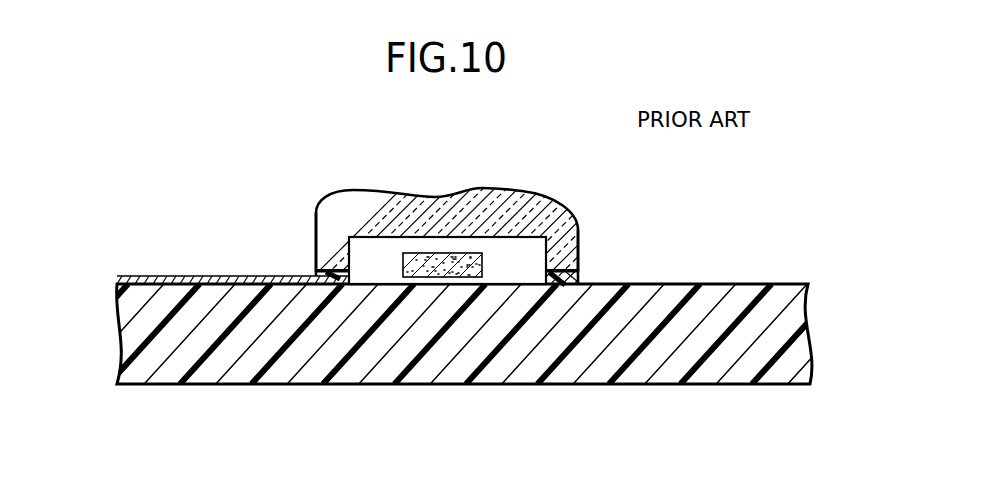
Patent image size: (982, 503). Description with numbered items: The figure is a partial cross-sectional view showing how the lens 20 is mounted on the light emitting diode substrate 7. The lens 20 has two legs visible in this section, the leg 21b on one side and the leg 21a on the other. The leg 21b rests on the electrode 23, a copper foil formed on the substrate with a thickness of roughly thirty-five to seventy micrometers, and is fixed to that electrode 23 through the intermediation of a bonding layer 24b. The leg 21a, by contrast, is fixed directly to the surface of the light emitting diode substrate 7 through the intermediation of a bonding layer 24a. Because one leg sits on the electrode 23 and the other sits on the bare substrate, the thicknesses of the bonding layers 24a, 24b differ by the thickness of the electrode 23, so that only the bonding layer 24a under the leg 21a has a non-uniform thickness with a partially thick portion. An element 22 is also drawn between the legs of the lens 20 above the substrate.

The light emitting diode substrate 7 is at (270, 385).
The lens 20 is at (527, 188).
The leg 21a is at (580, 248).
The leg 21b is at (315, 250).
The element body / chip 22 is at (468, 277).
The electrode 23 is at (157, 276).
The bonding layer 24a is at (582, 278).
The bonding layer 24b is at (315, 276).